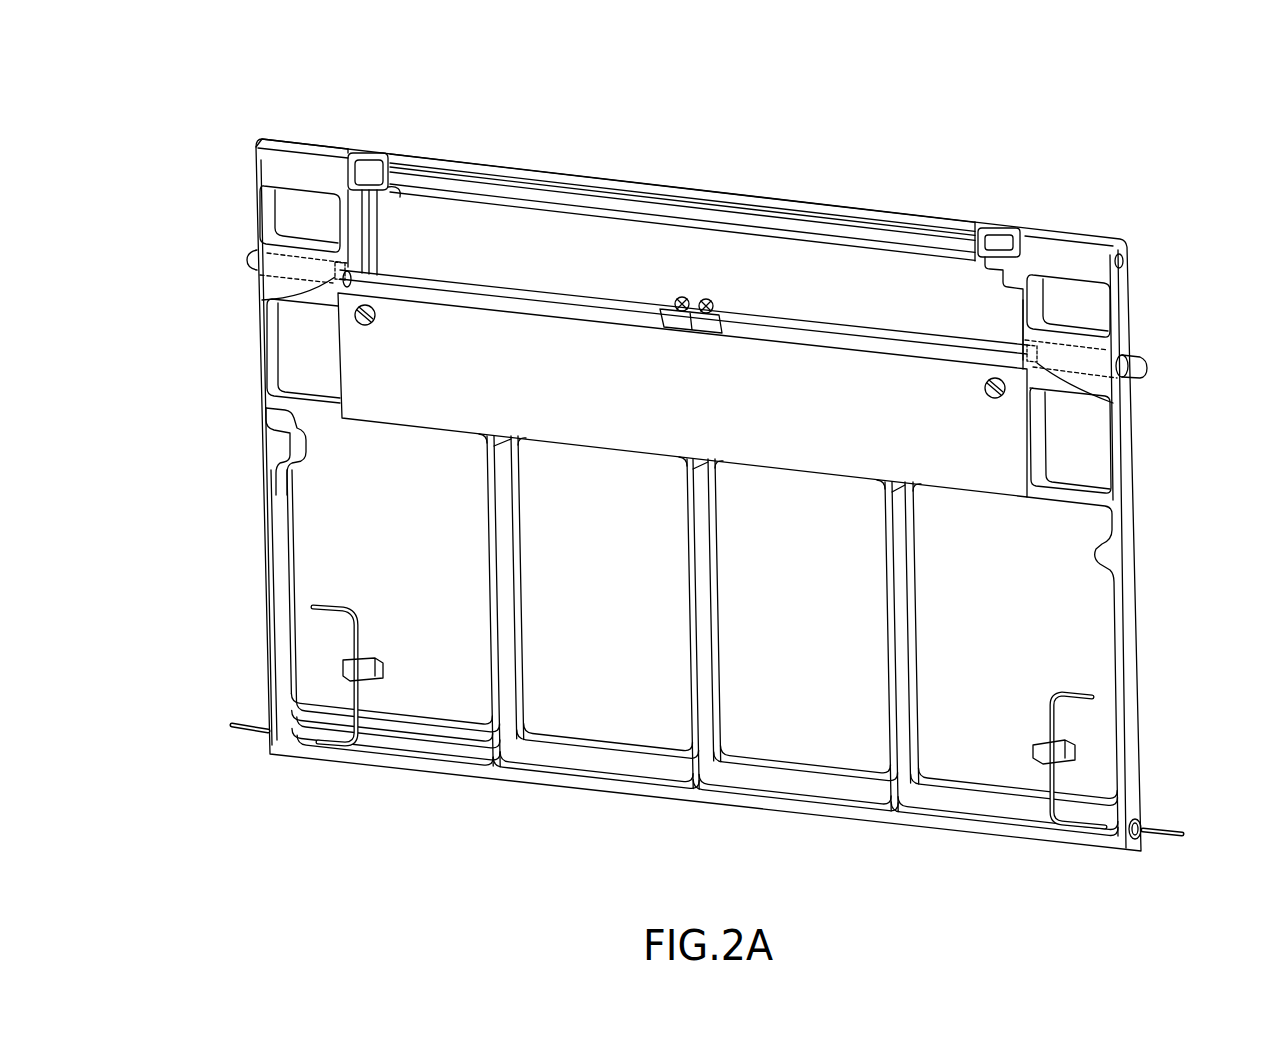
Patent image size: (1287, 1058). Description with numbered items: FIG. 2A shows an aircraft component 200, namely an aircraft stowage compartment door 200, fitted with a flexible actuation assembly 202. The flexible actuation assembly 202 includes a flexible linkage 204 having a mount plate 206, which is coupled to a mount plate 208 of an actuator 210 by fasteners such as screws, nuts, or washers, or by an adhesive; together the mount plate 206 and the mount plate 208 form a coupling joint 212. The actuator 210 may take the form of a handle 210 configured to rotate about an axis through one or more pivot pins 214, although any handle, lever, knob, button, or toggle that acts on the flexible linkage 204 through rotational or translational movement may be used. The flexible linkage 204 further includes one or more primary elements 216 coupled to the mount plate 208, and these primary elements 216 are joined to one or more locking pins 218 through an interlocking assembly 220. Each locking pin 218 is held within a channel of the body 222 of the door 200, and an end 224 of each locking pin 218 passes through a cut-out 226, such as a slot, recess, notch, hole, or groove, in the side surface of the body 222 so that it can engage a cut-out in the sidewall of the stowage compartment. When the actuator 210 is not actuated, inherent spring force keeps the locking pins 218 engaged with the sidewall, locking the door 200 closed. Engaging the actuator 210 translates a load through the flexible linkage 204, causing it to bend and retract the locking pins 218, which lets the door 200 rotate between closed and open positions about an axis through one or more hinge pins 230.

The aircraft stowage compartment door 200 is at (213, 73).
The flexible actuation assembly 202 is at (972, 200).
The flexible linkage 204 is at (885, 302).
The mount plate 206 is at (695, 307).
The mount plate 208 is at (660, 320).
The actuator 210 is at (442, 200).
The coupling joint 212 is at (733, 290).
The pivot pins 214 is at (373, 165).
The primary elements 216 is at (582, 298).
The locking pins 218 is at (267, 258).
The interlocking assembly 220 is at (262, 300).
The body 222 is at (265, 175).
The end 224 is at (257, 257).
The cut-out 226 is at (263, 270).
The hinge pins 230 is at (260, 745).